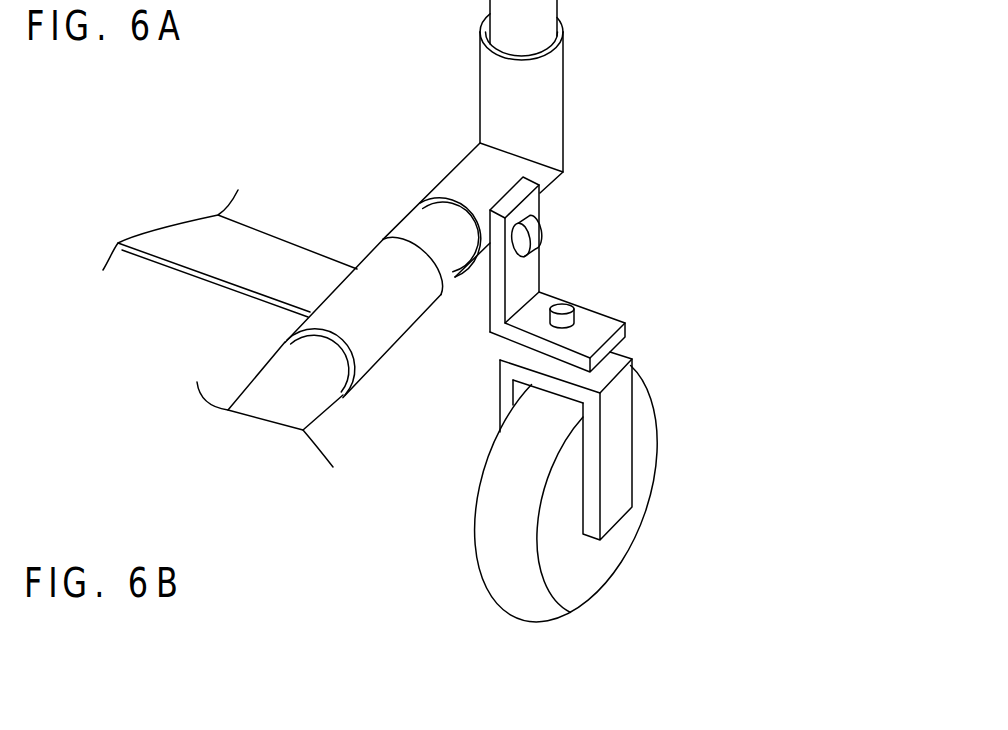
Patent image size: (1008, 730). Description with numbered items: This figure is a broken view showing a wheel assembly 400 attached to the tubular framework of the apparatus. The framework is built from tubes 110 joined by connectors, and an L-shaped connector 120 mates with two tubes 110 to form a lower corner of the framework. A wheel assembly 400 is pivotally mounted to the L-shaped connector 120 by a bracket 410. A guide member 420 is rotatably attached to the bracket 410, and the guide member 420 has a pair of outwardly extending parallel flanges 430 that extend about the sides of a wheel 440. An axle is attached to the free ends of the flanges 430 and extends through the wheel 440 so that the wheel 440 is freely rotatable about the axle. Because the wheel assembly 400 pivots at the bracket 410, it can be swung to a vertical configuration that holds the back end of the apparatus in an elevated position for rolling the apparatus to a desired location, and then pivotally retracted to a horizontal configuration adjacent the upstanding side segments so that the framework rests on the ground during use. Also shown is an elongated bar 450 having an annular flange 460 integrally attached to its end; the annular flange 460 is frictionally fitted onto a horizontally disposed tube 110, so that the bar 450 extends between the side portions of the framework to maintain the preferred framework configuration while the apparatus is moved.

The tube 110 is at (490, 4).
The L-shaped connector 120 is at (548, 87).
The wheel assembly 400 is at (633, 399).
The bracket 410 is at (539, 268).
The guide member 420 is at (606, 390).
The flanges 430 is at (508, 388).
The wheel 440 is at (600, 553).
The elongated bar 450 is at (177, 250).
The annular flange 460 is at (387, 267).